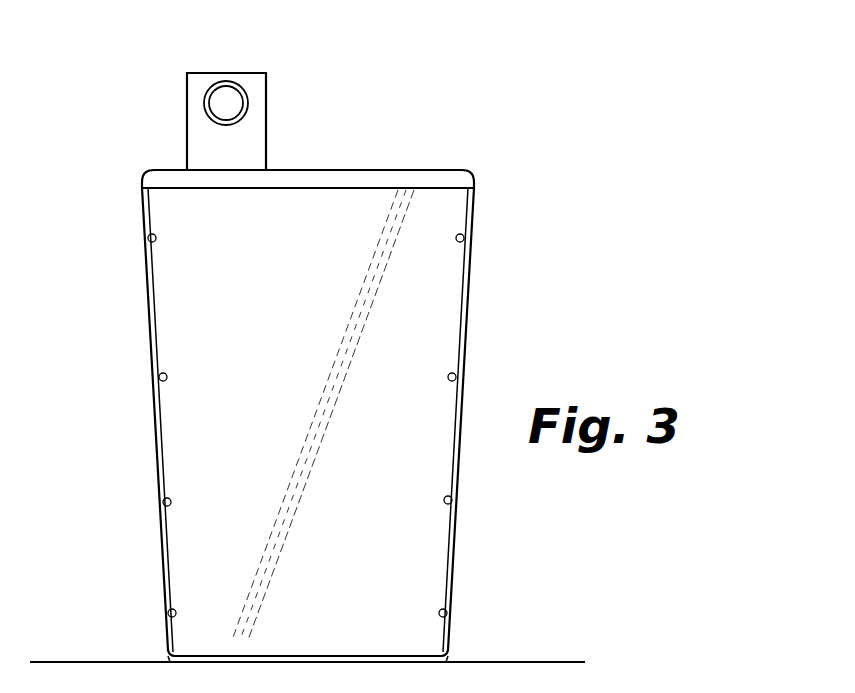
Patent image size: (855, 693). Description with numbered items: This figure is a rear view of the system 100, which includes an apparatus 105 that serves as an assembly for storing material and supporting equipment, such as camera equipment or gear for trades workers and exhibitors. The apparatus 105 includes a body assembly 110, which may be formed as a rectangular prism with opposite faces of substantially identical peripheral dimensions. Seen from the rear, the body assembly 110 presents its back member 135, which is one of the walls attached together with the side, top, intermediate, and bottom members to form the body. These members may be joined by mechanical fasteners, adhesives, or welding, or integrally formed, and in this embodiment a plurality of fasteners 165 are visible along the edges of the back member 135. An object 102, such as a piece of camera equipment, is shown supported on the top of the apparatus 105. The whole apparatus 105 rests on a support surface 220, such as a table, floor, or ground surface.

The system 100 is at (292, 348).
The object 102 is at (202, 137).
The apparatus 105 is at (503, 188).
The body assembly 110 is at (292, 373).
The back member 135 is at (424, 352).
The fasteners 165 is at (452, 502).
The support surface 220 is at (120, 662).